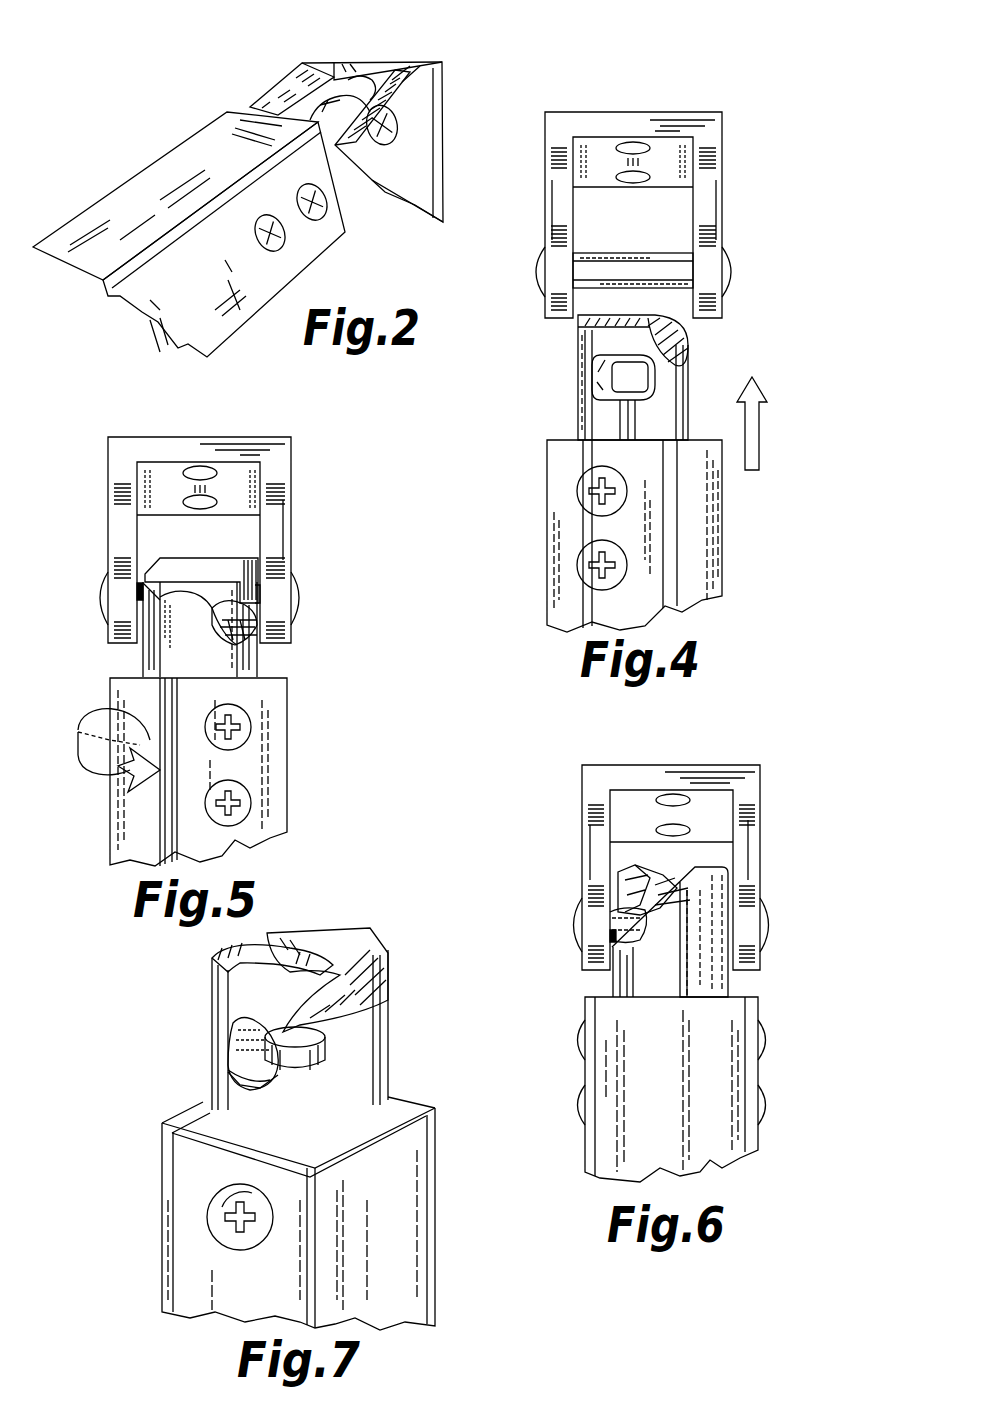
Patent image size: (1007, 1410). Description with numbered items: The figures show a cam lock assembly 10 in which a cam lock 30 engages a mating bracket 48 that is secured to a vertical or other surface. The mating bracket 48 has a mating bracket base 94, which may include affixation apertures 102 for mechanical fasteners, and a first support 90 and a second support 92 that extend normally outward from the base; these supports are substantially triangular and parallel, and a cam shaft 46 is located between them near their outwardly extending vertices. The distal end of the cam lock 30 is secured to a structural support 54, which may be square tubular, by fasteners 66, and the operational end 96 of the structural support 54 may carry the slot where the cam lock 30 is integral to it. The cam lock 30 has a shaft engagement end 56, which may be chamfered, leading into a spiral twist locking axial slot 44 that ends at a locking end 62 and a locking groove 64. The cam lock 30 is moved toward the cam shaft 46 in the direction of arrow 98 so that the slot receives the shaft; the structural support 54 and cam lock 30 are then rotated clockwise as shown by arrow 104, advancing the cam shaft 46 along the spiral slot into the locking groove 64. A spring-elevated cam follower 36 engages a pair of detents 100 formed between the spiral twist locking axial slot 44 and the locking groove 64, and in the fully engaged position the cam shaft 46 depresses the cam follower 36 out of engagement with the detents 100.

In FIG. 2, the mounting assembly 10 is at (222, 78).
In FIG. 2, the cam lock 30 is at (332, 100).
In FIG. 4, the cam lock 30 is at (555, 400).
In FIG. 5, the cam lock 30 is at (108, 660).
In FIG. 6, the cam lock 30 is at (710, 985).
In FIG. 7, the cam lock 30 is at (410, 1040).
In FIG. 4, the cam follower 36 is at (625, 390).
In FIG. 5, the cam follower 36 is at (232, 640).
In FIG. 7, the cam follower 36 is at (330, 1090).
In FIG. 4, the spiral twist locking axial slot 44 is at (663, 344).
In FIG. 6, the spiral twist locking axial slot 44 is at (692, 860).
In FIG. 7, the spiral twist locking axial slot 44 is at (340, 945).
In FIG. 4, the cam shaft 46 is at (629, 272).
In FIG. 5, the cam shaft 46 is at (262, 592).
In FIG. 6, the cam shaft 46 is at (640, 920).
In FIG. 4, the mating bracket 48 is at (648, 108).
In FIG. 5, the mating bracket 48 is at (132, 424).
In FIG. 6, the mating bracket 48 is at (624, 758).
In FIG. 2, the structural support 54 is at (108, 218).
In FIG. 4, the structural support 54 is at (700, 523).
In FIG. 5, the structural support 54 is at (85, 760).
In FIG. 6, the structural support 54 is at (716, 1078).
In FIG. 7, the structural support 54 is at (405, 1178).
In FIG. 4, the shaft engagement end 56 is at (557, 331).
In FIG. 5, the shaft engagement end 56 is at (204, 554).
In FIG. 6, the shaft engagement end 56 is at (620, 850).
In FIG. 7, the shaft engagement end 56 is at (200, 955).
In FIG. 7, the locking end 62 is at (245, 1068).
In FIG. 5, the locking groove 64 is at (140, 597).
In FIG. 6, the locking groove 64 is at (610, 937).
In FIG. 7, the locking groove 64 is at (253, 1080).
In FIG. 2, the fasteners 66 is at (292, 232).
In FIG. 4, the fasteners 66 is at (578, 562).
In FIG. 5, the fasteners 66 is at (228, 765).
In FIG. 2, the first support 90 is at (372, 112).
In FIG. 4, the first support 90 is at (712, 202).
In FIG. 5, the first support 90 is at (276, 531).
In FIG. 6, the first support 90 is at (745, 853).
In FIG. 2, the second support 92 is at (268, 98).
In FIG. 4, the second support 92 is at (553, 202).
In FIG. 6, the second support 92 is at (597, 843).
In FIG. 2, the mating bracket base 94 is at (388, 82).
In FIG. 4, the mating bracket base 94 is at (692, 120).
In FIG. 5, the mating bracket base 94 is at (182, 448).
In FIG. 6, the mating bracket base 94 is at (722, 775).
In FIG. 2, the operational end 96 is at (140, 156).
In FIG. 4, the arrow 98 is at (762, 440).
In FIG. 4, the detents 100 is at (605, 395).
In FIG. 5, the detents 100 is at (255, 618).
In FIG. 7, the detents 100 is at (345, 1010).
In FIG. 4, the affixation apertures 102 is at (632, 147).
In FIG. 6, the affixation apertures 102 is at (674, 798).
In FIG. 5, the arrow 104 is at (119, 750).